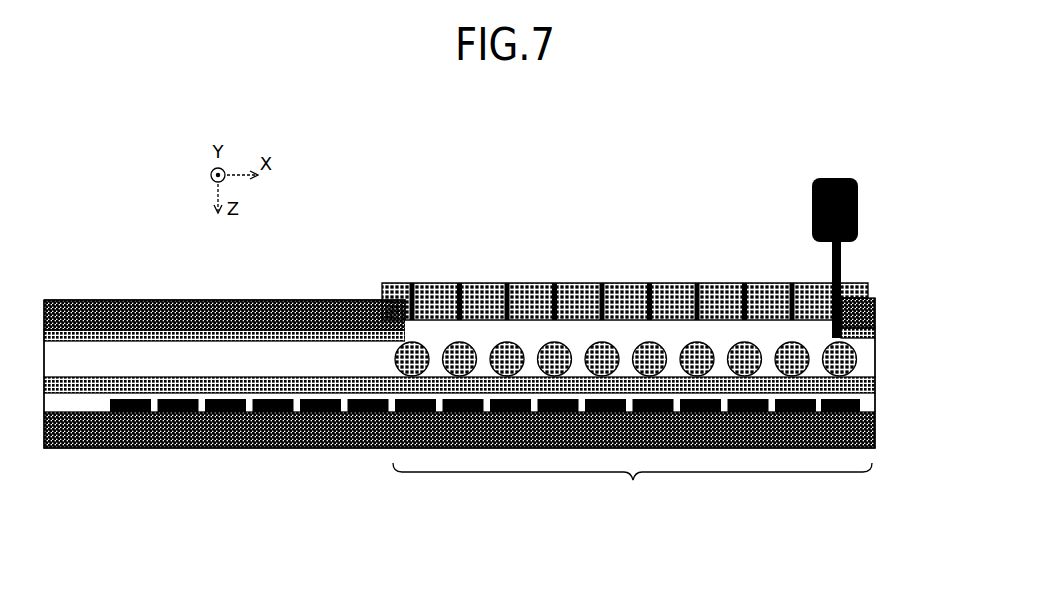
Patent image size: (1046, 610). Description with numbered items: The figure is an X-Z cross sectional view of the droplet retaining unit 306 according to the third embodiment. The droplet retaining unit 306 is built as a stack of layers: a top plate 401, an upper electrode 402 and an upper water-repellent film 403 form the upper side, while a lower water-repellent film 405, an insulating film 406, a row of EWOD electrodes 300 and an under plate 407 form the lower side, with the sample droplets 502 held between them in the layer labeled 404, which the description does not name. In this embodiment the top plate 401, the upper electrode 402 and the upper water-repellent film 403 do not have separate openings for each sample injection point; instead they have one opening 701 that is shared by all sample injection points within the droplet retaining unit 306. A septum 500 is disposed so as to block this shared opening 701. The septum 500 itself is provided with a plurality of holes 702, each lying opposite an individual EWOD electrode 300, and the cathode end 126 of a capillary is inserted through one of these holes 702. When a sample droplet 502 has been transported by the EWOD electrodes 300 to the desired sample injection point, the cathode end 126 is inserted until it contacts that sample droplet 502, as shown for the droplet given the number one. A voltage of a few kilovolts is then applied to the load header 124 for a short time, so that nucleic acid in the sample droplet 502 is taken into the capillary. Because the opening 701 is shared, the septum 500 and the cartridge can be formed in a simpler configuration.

The load header 124 is at (857, 210).
The cathode end 126 is at (842, 258).
The septum 500 is at (644, 248).
The top plate 401 is at (875, 313).
The upper electrode 402 is at (875, 332).
The upper water-repellent film 403 is at (875, 345).
The balls 404 is at (875, 367).
The lower water-repellent film 405 is at (875, 390).
The insulating film 406 is at (875, 407).
The under plate 407 is at (875, 440).
The EWOD electrode 300 is at (130, 412).
The droplet retaining unit 306 is at (632, 489).
The sample droplet 502 is at (830, 337).
The opening 701 is at (440, 332).
The holes 702 is at (460, 290).